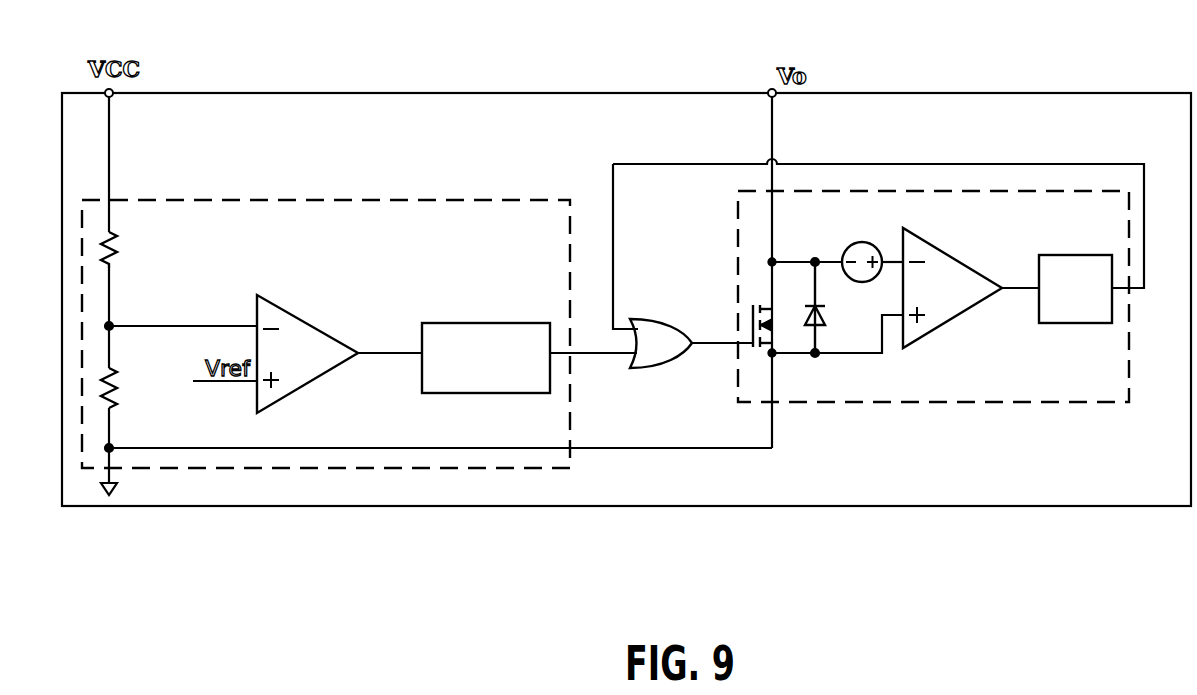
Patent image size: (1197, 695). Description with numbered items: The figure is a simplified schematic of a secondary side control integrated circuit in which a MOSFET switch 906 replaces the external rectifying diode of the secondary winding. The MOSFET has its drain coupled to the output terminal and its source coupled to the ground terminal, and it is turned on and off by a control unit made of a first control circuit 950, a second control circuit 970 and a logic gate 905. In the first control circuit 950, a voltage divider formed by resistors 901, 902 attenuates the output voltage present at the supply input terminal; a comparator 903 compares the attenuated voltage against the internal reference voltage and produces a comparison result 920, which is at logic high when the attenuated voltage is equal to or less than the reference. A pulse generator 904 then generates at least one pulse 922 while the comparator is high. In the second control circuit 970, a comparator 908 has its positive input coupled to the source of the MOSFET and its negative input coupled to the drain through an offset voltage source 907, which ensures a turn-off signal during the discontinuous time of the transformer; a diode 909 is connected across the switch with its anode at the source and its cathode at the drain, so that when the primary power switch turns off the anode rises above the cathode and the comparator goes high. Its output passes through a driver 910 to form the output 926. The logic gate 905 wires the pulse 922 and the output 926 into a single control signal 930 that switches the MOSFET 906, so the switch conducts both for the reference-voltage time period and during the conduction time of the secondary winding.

The resistor 901 is at (133, 250).
The resistor 902 is at (133, 388).
The comparator 903 is at (305, 320).
The pulse generator 904 is at (472, 318).
The logic gate 905 is at (665, 322).
The MOSFET switch 906 is at (786, 272).
The offset voltage source 907 is at (860, 247).
The comparator 908 is at (962, 318).
The diode 909 is at (838, 307).
The driver 910 is at (1057, 250).
The comparison result 920 is at (390, 371).
The pulse 922 is at (593, 345).
The output of second control circuit 926 is at (878, 213).
The control signal 930 is at (722, 330).
The first control circuit 950 is at (553, 248).
The second control circuit 970 is at (1105, 388).